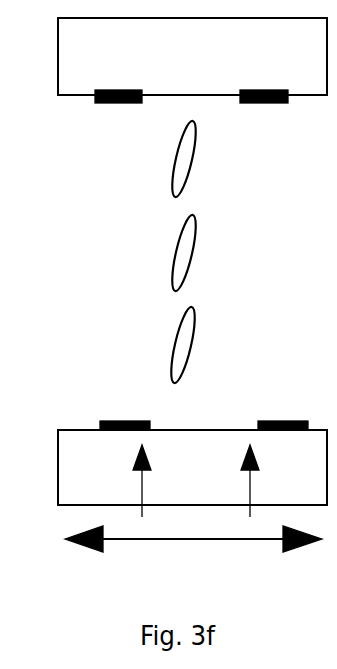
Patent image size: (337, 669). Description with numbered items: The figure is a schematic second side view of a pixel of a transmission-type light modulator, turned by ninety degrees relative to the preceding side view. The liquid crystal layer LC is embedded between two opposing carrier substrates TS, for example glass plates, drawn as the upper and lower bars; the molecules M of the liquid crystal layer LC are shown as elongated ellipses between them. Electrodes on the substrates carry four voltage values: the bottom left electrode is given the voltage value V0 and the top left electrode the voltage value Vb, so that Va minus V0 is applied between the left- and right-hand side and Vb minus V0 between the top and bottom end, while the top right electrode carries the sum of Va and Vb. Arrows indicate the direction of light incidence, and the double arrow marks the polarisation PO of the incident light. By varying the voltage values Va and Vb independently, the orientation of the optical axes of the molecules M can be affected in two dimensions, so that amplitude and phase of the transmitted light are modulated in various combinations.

The carrier substrate TS is at (192, 261).
The voltage value Vb is at (118, 116).
The voltage value V0 is at (125, 408).
The voltage value Va is at (283, 406).
The liquid crystal layer LC is at (150, 172).
The molecules M is at (182, 340).
The polarisation PO is at (167, 541).